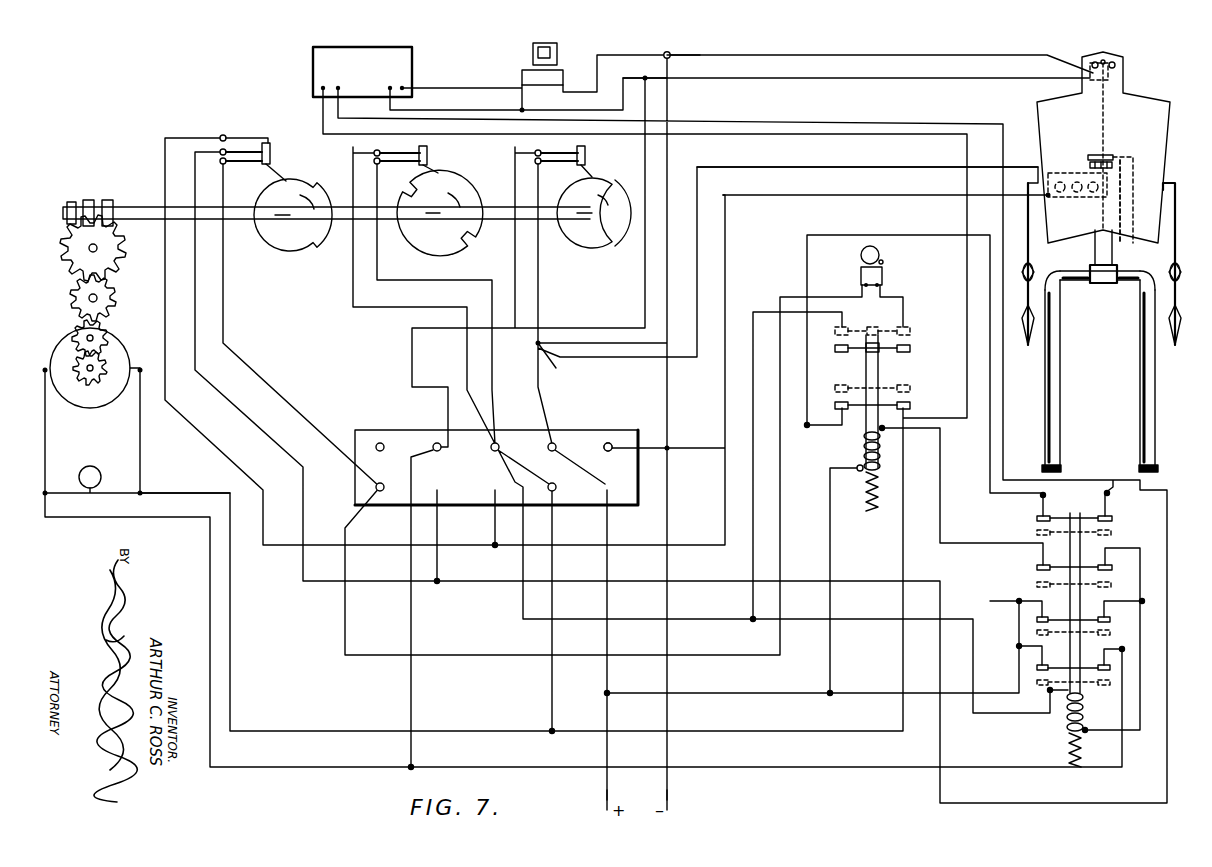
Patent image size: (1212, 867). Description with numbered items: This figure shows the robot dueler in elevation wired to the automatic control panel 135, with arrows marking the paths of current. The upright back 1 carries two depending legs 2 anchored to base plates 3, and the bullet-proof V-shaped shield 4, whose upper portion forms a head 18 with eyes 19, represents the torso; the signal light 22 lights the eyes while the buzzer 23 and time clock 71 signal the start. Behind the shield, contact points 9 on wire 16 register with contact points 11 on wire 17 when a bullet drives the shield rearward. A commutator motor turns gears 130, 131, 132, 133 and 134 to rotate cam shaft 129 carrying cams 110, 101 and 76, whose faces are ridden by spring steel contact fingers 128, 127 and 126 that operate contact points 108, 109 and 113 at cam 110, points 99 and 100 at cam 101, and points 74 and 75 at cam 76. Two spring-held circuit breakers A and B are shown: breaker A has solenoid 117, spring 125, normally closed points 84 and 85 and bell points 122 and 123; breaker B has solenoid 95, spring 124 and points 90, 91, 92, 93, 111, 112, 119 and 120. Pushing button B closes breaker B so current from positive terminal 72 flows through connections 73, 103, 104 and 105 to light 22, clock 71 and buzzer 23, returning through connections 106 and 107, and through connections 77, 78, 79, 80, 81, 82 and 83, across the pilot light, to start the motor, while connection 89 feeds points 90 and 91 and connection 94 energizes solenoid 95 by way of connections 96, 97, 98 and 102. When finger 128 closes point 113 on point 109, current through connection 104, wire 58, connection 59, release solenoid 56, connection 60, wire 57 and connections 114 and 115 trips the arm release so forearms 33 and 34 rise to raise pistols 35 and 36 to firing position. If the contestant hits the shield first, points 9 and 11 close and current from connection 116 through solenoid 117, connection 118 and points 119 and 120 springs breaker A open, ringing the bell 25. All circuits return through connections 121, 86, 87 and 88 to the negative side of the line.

The back 1 is at (1090, 258).
The legs 2 is at (1165, 413).
The base plates 3 is at (1168, 465).
The V-shaped shield 4 is at (1182, 127).
The electrical contact points 9 is at (1088, 165).
The electrical contact points 11 is at (1110, 153).
The electric wire 16 is at (1111, 201).
The electric wire 17 is at (1133, 160).
The head 18 is at (1125, 87).
The eyes 19 is at (1140, 66).
The signal light bulb 22 is at (1105, 58).
The buzzer 23 is at (533, 50).
The bell 25 is at (879, 252).
The forearm 33 is at (1032, 220).
The forearm 34 is at (1180, 227).
The pistol 35 is at (1033, 268).
The pistol 36 is at (1180, 277).
The arm release solenoid 56 is at (1084, 196).
The wire 57 is at (992, 198).
The wire 58 is at (992, 170).
The connection 59 is at (1093, 180).
The connection 60 is at (1077, 192).
The time clock 71 is at (413, 67).
The positive terminal 72 is at (609, 797).
The connection 73 is at (603, 693).
The contact point 74 is at (573, 164).
The contact point 75 is at (581, 147).
The cam 76 is at (585, 262).
The connection 77 is at (430, 455).
The connection 78 is at (412, 770).
The connection 79 is at (48, 496).
The connection 80 is at (45, 366).
The connection 81 is at (137, 369).
The connection 82 is at (142, 488).
The connection 83 is at (549, 735).
The circuit breaker point 84 is at (912, 400).
The circuit breaker point 85 is at (830, 402).
The connection 86 is at (800, 428).
The connection 87 is at (667, 448).
The connection 88 is at (669, 797).
The connection 89 is at (828, 691).
The circuit breaker point 90 is at (1016, 646).
The circuit breaker point 91 is at (1128, 648).
The circuit breaker point 92 is at (1016, 601).
The contact point 93 is at (1145, 600).
The connection 94 is at (1088, 726).
The solenoid 95 is at (1067, 727).
The connection 96 is at (1046, 694).
The connection 97 is at (750, 617).
The connection 98 is at (491, 452).
The contact point 99 is at (423, 147).
The contact point 100 is at (415, 163).
The cam 101 is at (436, 256).
The connection 102 is at (558, 486).
The connection 103 is at (558, 446).
The connection 104 is at (558, 363).
The connection 105 is at (672, 55).
The connection point 106 is at (646, 78).
The connection 107 is at (385, 492).
The contact point 108 is at (264, 165).
The contact point 109 is at (272, 150).
The cam 110 is at (285, 250).
The circuit breaker point 111 is at (1103, 497).
The circuit breaker point 112 is at (1036, 519).
The contact point 113 is at (268, 133).
The connection 114 is at (493, 549).
The connection 115 is at (440, 585).
The connection 116 is at (857, 466).
The solenoid 117 is at (880, 462).
The connection 118 is at (884, 432).
The circuit breaker point 119 is at (1036, 567).
The circuit breaker point 120 is at (1114, 555).
The connection 121 is at (1040, 498).
The circuit breaker point 122 is at (830, 340).
The circuit breaker point 123 is at (912, 340).
The spring 124 is at (1069, 748).
The spring 125 is at (866, 495).
The electric spring steel contact finger 126 is at (591, 168).
The electric spring steel contact finger 127 is at (436, 168).
The electric spring steel contact finger 128 is at (280, 167).
The cam shaft 129 is at (132, 185).
The gear 130 is at (88, 185).
The gear 131 is at (115, 248).
The gear 132 is at (112, 296).
The gear 133 is at (105, 330).
The gear 134 is at (100, 380).
The automatic control panel 135 is at (618, 415).
The circuit breaker A is at (865, 435).
The circuit breaker B is at (1081, 629).